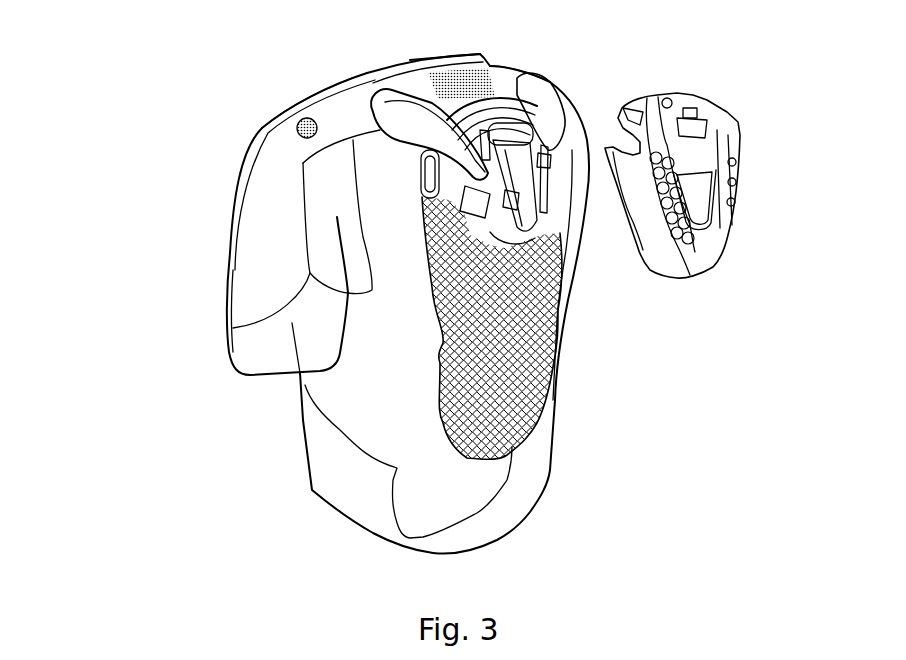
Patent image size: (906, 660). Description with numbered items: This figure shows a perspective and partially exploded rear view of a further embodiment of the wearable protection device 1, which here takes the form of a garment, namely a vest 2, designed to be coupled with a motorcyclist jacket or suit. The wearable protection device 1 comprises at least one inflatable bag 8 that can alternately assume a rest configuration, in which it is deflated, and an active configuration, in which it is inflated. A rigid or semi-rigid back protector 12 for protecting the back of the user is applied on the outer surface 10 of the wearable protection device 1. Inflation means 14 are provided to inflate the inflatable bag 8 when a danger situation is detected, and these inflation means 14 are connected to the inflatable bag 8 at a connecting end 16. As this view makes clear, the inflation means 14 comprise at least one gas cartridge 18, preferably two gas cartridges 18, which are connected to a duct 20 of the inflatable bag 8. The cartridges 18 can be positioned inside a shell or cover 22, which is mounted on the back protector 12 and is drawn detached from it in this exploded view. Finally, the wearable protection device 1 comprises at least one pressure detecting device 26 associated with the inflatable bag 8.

The wearable protection device 1 is at (123, 130).
The vest 2 is at (207, 320).
The inflatable bag 8 is at (402, 507).
The outer surface 10 is at (543, 480).
The back protector 12 is at (537, 365).
The inflation means 14 is at (525, 213).
The connecting end 16 is at (367, 88).
The gas cartridge 18 is at (473, 180).
The duct 20 is at (415, 93).
The shell 22 is at (728, 268).
The pressure detecting device 26 is at (310, 108).